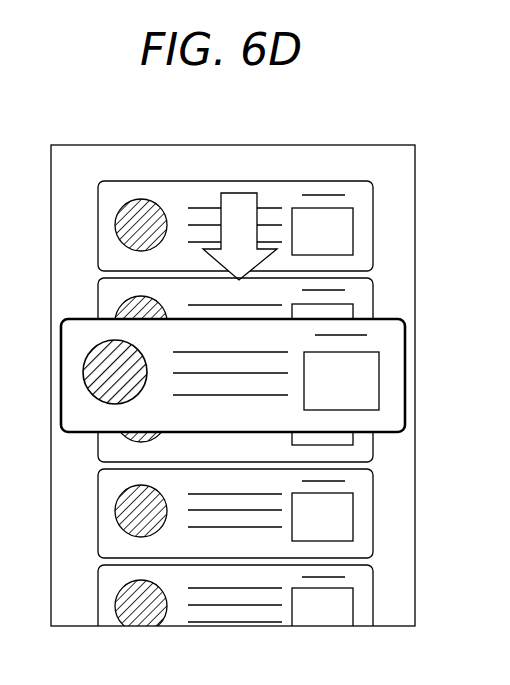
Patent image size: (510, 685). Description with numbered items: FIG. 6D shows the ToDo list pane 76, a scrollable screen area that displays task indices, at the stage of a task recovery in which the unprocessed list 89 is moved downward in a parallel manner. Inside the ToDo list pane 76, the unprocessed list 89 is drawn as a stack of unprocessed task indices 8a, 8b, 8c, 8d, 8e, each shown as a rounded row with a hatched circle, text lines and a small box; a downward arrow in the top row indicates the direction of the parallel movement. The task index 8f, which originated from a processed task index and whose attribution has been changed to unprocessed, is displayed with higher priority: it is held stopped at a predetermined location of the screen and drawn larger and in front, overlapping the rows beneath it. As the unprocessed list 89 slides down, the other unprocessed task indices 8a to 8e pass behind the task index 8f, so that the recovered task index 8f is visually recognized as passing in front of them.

The ToDo list pane 76 is at (181, 145).
The unprocessed list 89 is at (204, 382).
The unprocessed task index 8a is at (98, 224).
The unprocessed task index 8b is at (98, 297).
The unprocessed task index 8c is at (98, 446).
The unprocessed task index 8d is at (98, 498).
The unprocessed task index 8e is at (98, 593).
The task index 8f is at (61, 368).